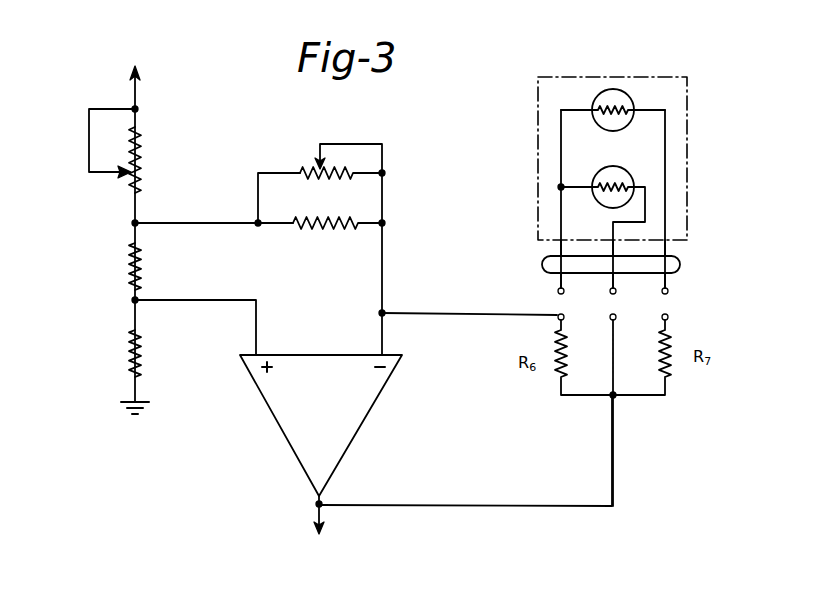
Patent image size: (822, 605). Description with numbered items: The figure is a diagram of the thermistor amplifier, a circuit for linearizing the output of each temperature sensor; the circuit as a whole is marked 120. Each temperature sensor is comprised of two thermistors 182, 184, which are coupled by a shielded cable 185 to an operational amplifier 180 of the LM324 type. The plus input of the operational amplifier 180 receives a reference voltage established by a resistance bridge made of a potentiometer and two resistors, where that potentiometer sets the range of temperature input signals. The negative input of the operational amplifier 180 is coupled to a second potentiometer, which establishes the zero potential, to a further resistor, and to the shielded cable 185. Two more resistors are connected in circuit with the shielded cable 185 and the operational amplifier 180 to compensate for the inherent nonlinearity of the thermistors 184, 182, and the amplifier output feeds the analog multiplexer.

The bridge circuit 120 is at (76, 88).
The operational amplifier 180 is at (373, 407).
The thermistor 182 is at (622, 167).
The thermistor 184 is at (620, 90).
The shielded cable 185 is at (683, 265).